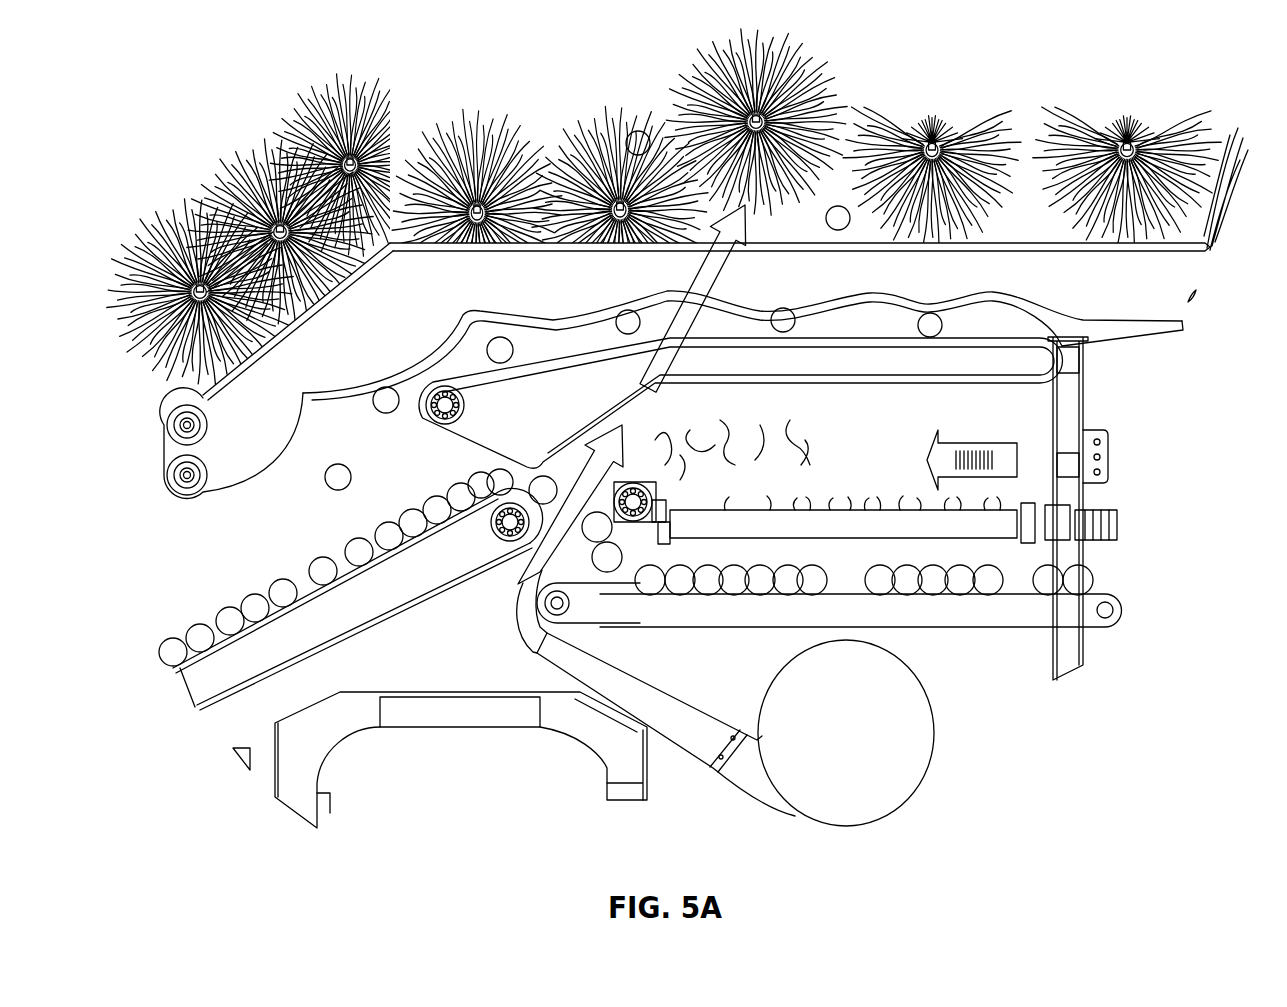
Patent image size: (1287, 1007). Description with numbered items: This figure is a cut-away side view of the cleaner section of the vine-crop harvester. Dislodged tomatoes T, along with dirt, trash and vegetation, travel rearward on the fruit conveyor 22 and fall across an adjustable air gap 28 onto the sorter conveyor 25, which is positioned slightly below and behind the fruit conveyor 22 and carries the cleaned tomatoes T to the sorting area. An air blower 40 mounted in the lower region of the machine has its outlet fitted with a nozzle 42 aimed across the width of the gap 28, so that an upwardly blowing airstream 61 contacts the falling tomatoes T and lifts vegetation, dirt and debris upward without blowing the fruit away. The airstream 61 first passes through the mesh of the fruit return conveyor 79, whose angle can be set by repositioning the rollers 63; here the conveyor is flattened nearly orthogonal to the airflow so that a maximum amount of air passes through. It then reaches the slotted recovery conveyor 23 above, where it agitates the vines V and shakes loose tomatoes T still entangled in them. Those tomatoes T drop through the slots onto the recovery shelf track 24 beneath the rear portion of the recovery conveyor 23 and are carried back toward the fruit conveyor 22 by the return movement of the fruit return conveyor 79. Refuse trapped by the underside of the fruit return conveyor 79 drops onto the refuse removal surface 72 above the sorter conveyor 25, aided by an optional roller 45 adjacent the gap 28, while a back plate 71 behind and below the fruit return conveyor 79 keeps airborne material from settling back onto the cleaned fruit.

The vines V is at (458, 106).
The recovery conveyor 23 is at (418, 252).
The rollers 63 is at (635, 391).
The recovery shelf track 24 is at (1118, 335).
The fruit return conveyor 79 is at (820, 392).
The back plate 71 is at (1046, 402).
The upwardly blowing airstream 61 is at (717, 277).
The tomatoes T is at (328, 484).
The fruit conveyor 22 is at (352, 560).
The refuse removal surface 72 is at (696, 507).
The roller 45 is at (633, 523).
The sorter conveyor 25 is at (855, 592).
The air gap 28 is at (567, 570).
The nozzle 42 is at (527, 583).
The air blower 40 is at (910, 797).